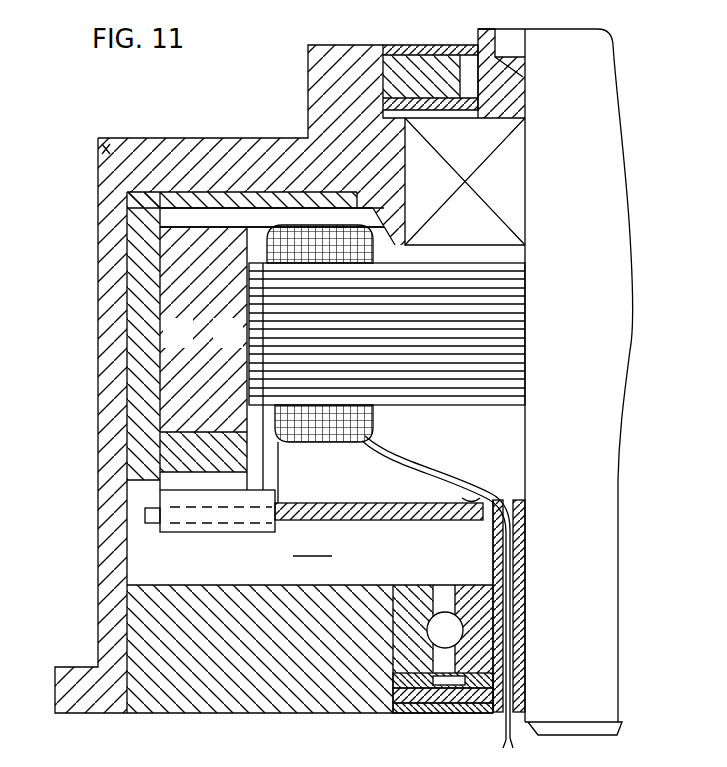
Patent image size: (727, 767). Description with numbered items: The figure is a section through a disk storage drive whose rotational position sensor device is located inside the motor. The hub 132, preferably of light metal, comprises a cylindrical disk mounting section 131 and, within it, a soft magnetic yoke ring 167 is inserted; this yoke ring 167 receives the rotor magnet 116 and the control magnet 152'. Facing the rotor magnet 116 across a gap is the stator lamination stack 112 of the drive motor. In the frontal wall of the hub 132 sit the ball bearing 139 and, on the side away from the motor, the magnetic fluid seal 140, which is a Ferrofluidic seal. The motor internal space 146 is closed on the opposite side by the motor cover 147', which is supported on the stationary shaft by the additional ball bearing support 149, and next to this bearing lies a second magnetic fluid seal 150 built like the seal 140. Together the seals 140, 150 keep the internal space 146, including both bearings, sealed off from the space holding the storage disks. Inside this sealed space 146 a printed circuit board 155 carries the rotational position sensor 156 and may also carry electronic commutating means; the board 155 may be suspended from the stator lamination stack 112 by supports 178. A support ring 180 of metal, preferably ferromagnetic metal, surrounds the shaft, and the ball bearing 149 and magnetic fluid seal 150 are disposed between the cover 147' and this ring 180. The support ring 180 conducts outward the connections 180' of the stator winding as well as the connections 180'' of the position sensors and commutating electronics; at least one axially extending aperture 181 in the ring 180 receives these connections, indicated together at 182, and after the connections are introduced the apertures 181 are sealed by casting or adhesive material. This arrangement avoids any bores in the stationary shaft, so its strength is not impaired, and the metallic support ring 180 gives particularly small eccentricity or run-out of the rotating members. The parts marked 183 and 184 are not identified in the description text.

The stator lamination stack 112 is at (262, 290).
The rotor magnet 116 is at (170, 282).
The disk mounting section 131 is at (112, 320).
The hub 132 is at (105, 148).
The ball bearing 139 is at (505, 170).
The magnetic fluid seal 140 is at (422, 45).
The internal space of the motor 146 is at (312, 546).
The motor cover 147' is at (310, 671).
The ball bearing support 149 is at (482, 655).
The magnetic fluid seal 150 is at (435, 703).
The control magnet 152' is at (143, 452).
The printed circuit board 155 is at (380, 480).
The rotational position sensor 156 is at (195, 513).
The soft magnetic yoke ring 167 is at (128, 387).
The supports 178 is at (275, 457).
The support ring 180 is at (552, 606).
The connections of the stator winding 180' is at (388, 482).
The connections of the rotational position sensors 180'' is at (437, 489).
The axially extending apertures 181 is at (505, 582).
The connections 182 is at (500, 727).
The housing end block 183 is at (230, 165).
The shim strip 184 is at (178, 198).